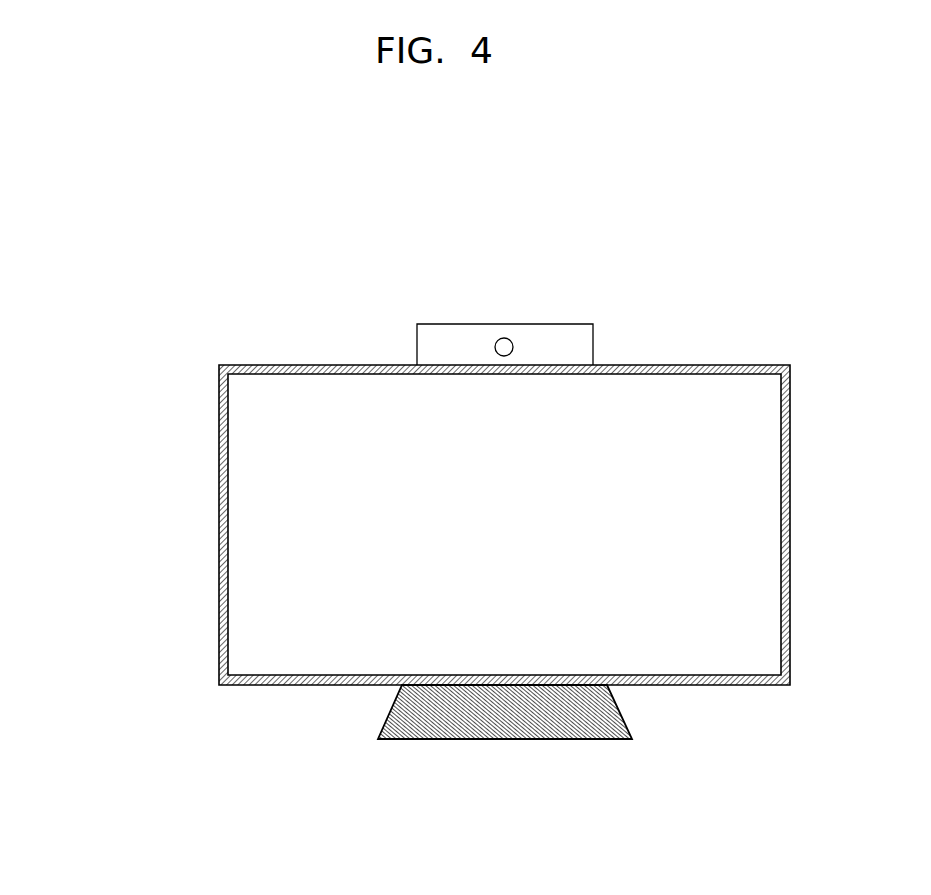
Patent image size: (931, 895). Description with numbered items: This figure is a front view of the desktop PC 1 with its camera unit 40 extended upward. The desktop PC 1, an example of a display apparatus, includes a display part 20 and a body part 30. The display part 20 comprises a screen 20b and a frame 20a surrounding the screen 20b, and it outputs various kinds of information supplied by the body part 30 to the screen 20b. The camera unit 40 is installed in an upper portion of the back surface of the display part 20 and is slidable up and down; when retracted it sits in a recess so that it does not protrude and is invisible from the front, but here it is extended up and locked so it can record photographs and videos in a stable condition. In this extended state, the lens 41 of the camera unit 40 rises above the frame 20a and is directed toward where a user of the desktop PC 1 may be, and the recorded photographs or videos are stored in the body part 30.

The desktop PC 1 is at (771, 227).
The display part 20 is at (703, 364).
The frame 20a is at (218, 366).
The screen 20b is at (247, 490).
The body part 30 is at (385, 722).
The camera unit 40 is at (438, 326).
The lens 41 is at (505, 337).